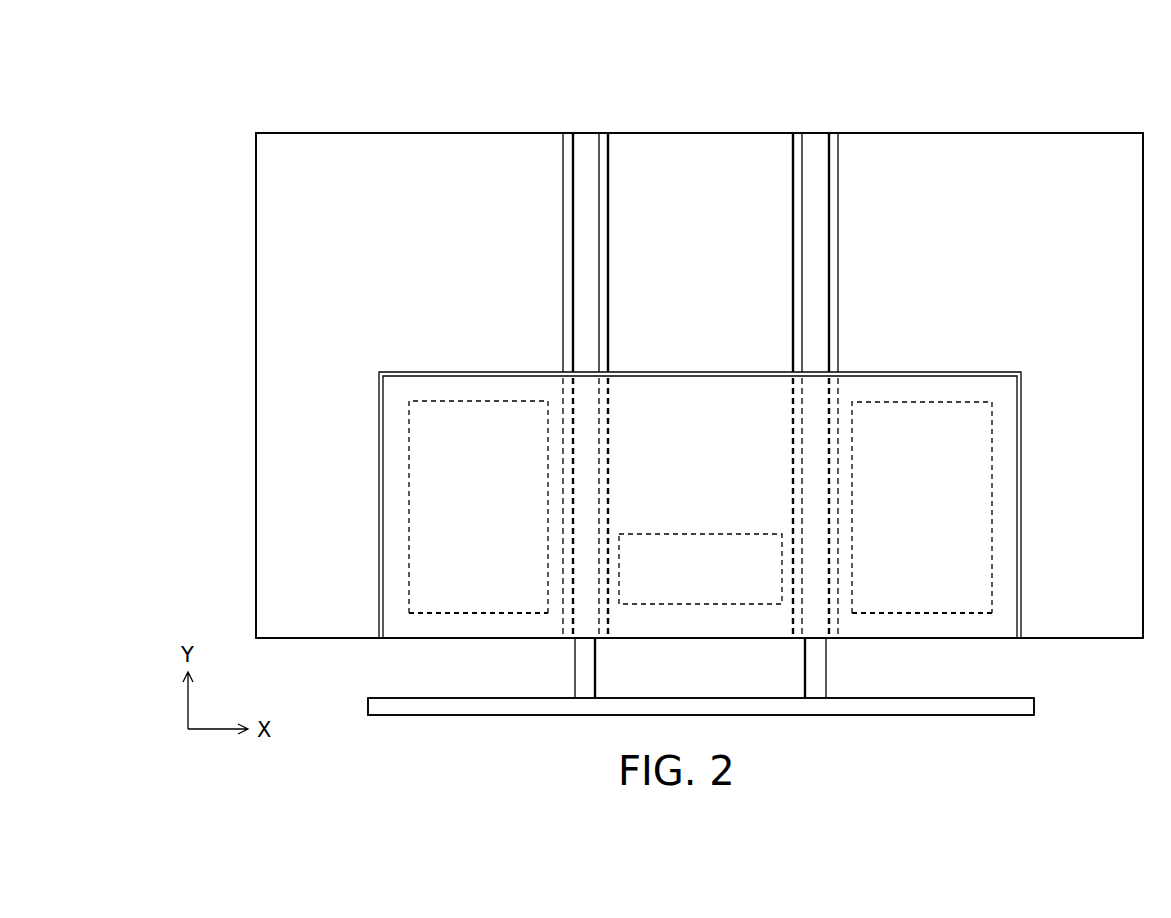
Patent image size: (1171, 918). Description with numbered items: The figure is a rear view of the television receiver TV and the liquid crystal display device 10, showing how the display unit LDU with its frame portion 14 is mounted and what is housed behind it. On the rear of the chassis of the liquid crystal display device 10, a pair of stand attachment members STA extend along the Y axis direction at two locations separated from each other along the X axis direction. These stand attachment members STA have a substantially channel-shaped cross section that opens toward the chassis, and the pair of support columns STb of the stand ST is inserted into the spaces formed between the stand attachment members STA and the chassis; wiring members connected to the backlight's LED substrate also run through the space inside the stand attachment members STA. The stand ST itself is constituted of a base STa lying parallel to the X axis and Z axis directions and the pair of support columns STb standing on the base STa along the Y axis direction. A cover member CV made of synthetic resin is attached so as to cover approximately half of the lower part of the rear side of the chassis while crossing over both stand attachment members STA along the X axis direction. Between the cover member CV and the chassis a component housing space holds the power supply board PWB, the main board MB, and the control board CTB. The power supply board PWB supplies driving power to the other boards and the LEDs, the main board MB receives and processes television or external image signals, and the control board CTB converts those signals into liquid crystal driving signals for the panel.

The television receiver TV is at (942, 95).
The liquid crystal display device 10 is at (1015, 125).
The liquid crystal display unit LDU is at (328, 133).
The frame / bezel 14 is at (452, 155).
The stand attachment members STA is at (585, 153).
The stand ST is at (368, 710).
The base STa is at (962, 703).
The support columns STb is at (575, 670).
The cover member CV is at (1005, 552).
The power supply board PWB is at (450, 613).
The main board MB is at (918, 613).
The control board CTB is at (702, 604).